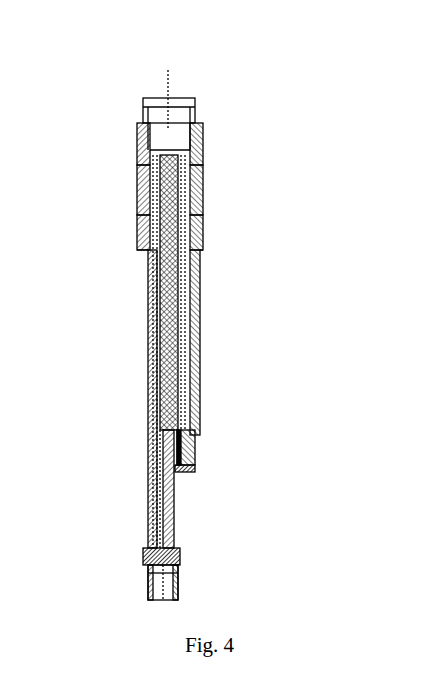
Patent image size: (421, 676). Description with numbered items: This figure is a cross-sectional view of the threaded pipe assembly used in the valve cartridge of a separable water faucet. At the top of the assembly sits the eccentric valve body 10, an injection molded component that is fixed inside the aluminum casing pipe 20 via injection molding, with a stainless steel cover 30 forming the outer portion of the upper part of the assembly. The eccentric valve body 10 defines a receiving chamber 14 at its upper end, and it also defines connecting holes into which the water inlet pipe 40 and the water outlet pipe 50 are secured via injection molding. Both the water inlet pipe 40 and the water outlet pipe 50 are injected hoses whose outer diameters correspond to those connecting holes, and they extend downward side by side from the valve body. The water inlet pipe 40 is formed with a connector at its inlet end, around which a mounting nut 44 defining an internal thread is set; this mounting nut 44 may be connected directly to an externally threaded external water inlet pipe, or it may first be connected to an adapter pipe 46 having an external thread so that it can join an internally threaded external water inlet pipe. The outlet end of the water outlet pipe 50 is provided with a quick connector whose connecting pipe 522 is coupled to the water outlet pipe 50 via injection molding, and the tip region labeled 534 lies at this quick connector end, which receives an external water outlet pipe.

The receiving chamber 14 is at (165, 104).
The eccentric valve body 10 is at (140, 125).
The aluminum casing pipe 20 is at (137, 183).
The stainless steel cover 30 is at (137, 247).
The water inlet pipe 40 is at (152, 418).
The mounting nut 44 is at (147, 550).
The adapter pipe 46 is at (148, 595).
The water outlet pipe 50 is at (198, 289).
The tube tip 534 is at (193, 437).
The connecting pipe 522 is at (193, 452).